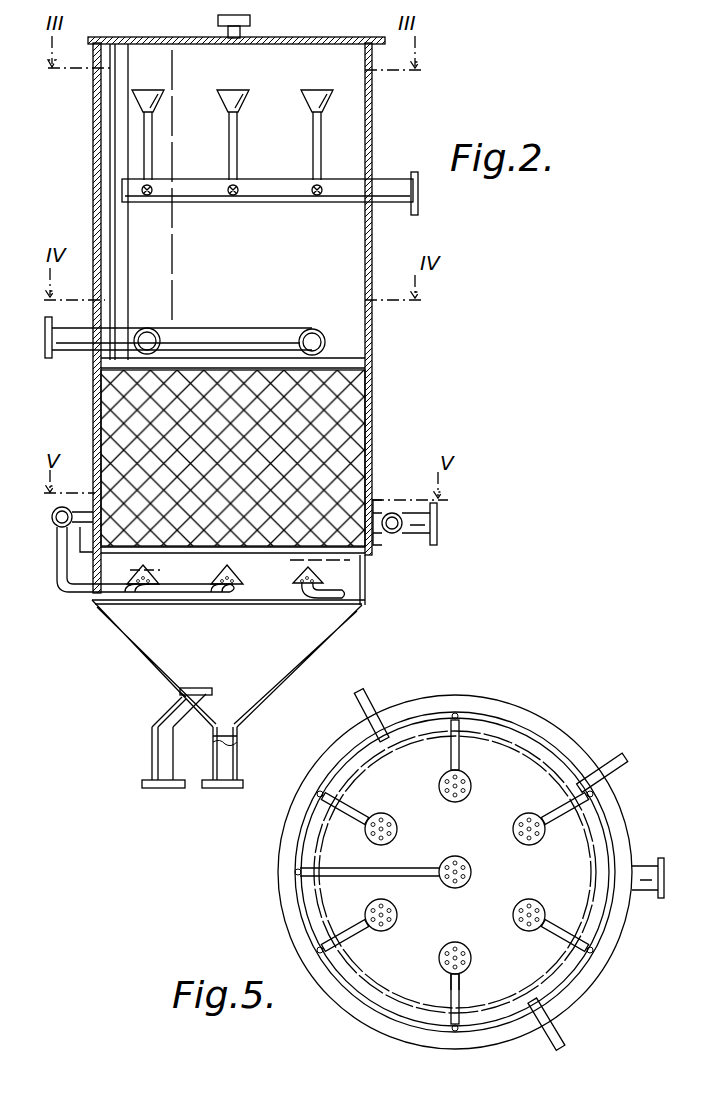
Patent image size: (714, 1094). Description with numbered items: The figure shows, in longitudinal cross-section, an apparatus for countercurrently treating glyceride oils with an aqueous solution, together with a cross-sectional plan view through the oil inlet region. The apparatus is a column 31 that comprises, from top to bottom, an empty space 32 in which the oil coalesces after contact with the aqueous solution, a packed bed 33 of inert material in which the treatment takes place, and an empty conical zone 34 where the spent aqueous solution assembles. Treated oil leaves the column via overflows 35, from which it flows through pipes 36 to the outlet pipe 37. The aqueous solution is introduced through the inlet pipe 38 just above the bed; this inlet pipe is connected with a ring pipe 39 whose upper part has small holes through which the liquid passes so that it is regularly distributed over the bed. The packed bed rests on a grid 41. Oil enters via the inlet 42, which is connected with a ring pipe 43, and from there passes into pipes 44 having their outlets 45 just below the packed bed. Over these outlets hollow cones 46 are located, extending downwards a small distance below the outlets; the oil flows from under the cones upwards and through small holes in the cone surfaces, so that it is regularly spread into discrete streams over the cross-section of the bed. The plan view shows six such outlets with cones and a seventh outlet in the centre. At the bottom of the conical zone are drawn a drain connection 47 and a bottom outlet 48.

In FIG. 2, the column 31 is at (93, 190).
In FIG. 5, the column 31 is at (505, 735).
In FIG. 2, the empty space 32 is at (118, 147).
In FIG. 2, the packed bed 33 is at (105, 424).
In FIG. 2, the empty conical zone 34 is at (180, 690).
In FIG. 2, the overflows 35 is at (140, 100).
In FIG. 2, the pipes 36 is at (148, 126).
In FIG. 2, the outlet pipe 37 is at (378, 192).
In FIG. 2, the inlet pipe 38 is at (80, 352).
In FIG. 2, the ring pipe 39 is at (326, 346).
In FIG. 2, the grid 41 is at (262, 560).
In FIG. 2, the inlet 42 is at (434, 540).
In FIG. 5, the inlet 42 is at (650, 866).
In FIG. 2, the ring pipe 43 is at (386, 520).
In FIG. 5, the ring pipe 43 is at (565, 750).
In FIG. 2, the pipes 44 is at (58, 586).
In FIG. 5, the pipes 44 is at (410, 872).
In FIG. 2, the outlets 45 is at (318, 595).
In FIG. 5, the outlets 45 is at (438, 960).
In FIG. 2, the hollow cones 46 is at (318, 571).
In FIG. 5, the hollow cones 46 is at (470, 796).
In FIG. 2, the drain pipe 47 is at (160, 756).
In FIG. 2, the outlet pipe 48 is at (230, 752).